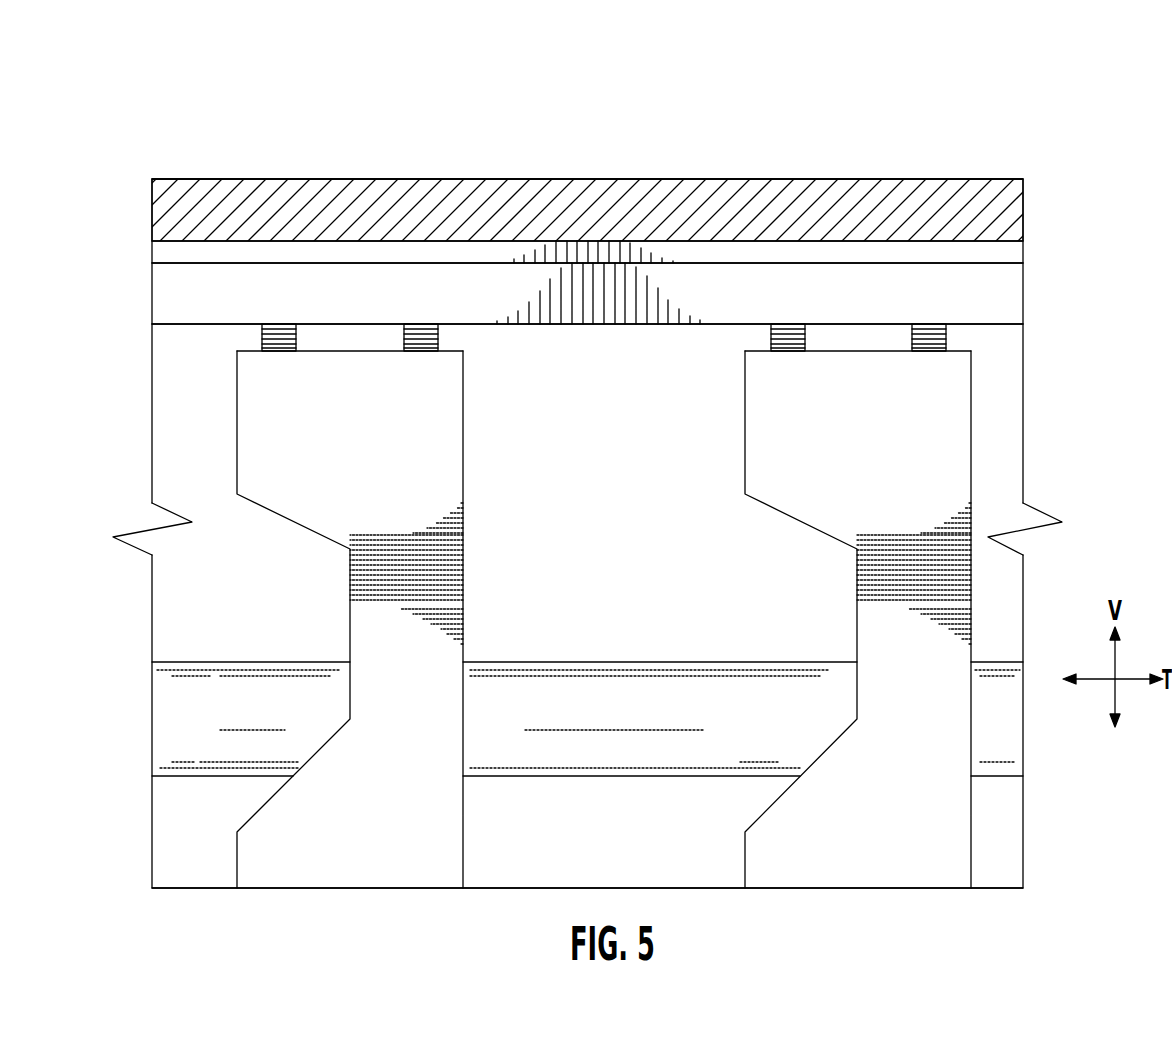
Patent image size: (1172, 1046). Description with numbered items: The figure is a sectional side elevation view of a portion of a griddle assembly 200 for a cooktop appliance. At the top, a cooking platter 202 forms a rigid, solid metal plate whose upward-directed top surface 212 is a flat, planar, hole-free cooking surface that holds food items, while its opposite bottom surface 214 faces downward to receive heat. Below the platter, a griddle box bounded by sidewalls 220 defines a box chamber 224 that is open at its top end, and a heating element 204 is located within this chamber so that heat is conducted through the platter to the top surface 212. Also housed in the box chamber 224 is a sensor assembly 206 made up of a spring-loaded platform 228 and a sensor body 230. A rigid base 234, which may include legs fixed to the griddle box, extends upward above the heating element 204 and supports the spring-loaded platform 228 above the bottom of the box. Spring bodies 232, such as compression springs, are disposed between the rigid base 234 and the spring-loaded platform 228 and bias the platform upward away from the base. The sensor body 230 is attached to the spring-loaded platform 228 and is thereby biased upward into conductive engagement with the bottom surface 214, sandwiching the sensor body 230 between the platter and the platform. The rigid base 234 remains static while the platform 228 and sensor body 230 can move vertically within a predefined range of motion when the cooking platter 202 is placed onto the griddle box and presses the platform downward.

The griddle assembly 200 is at (171, 108).
The cooking platter 202 is at (175, 213).
The heating element 204 is at (668, 690).
The sensor assembly 206 is at (170, 397).
The top surface 212 is at (490, 174).
The bottom surface 214 is at (516, 252).
The sidewalls 220 is at (175, 611).
The box chamber 224 is at (635, 492).
The spring-loaded platform 228 is at (175, 293).
The sensor body 230 is at (712, 247).
The spring bodies 232 is at (280, 344).
The rigid base 234 is at (440, 449).